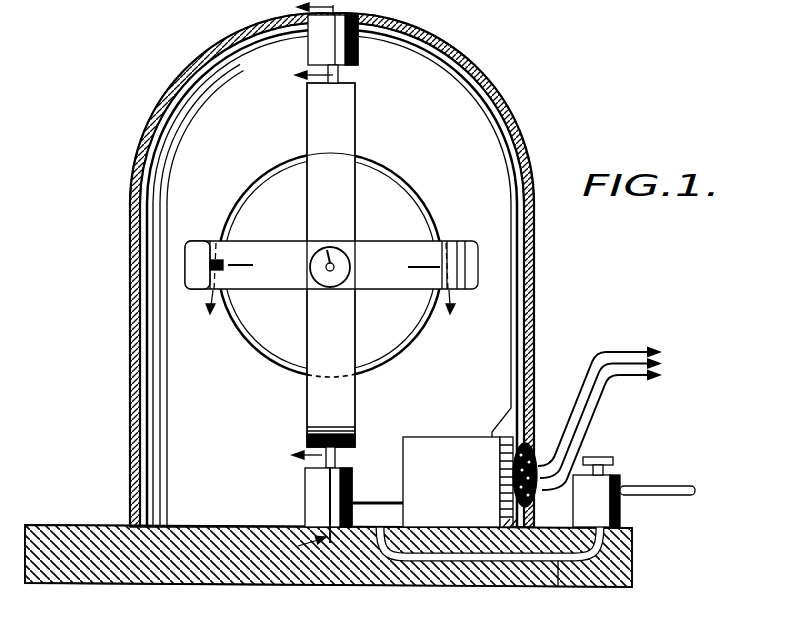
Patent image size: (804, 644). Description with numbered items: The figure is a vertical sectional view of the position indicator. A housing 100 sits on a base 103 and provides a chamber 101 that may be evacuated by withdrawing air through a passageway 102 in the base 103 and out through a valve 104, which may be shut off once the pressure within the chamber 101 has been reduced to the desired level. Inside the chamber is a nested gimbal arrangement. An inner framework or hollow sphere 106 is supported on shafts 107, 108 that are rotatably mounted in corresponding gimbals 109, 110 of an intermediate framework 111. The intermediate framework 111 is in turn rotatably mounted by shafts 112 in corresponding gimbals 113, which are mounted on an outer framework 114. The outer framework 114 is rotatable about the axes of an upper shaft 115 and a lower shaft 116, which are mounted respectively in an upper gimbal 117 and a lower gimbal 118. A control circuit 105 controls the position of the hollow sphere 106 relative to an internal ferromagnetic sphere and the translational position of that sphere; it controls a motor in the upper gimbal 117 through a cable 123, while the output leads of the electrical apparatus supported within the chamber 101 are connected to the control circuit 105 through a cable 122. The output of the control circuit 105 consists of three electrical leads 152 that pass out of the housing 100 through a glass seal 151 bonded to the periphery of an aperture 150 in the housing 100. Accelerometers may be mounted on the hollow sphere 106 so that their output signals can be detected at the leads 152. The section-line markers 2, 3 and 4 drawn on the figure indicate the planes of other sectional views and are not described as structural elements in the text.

The section line 2- 2 is at (296, 46).
The section line 3- 3 is at (295, 504).
The section line 4- 4 is at (330, 319).
The housing 100 is at (522, 119).
The chamber 101 is at (452, 107).
The passageway 102 is at (557, 590).
The base 103 is at (633, 557).
The valve 104 is at (622, 472).
The control circuit 105 is at (424, 432).
The hollow sphere 106 is at (287, 370).
The shaft 107 is at (217, 241).
The shaft 108 is at (446, 241).
The gimbal 109 is at (210, 241).
The gimbal 110 is at (452, 243).
The intermediate framework 111 is at (268, 238).
The shaft 112 is at (336, 248).
The gimbal 113 is at (318, 284).
The outer framework 114 is at (364, 112).
The upper shaft 115 is at (340, 77).
The lower shaft 116 is at (337, 457).
The upper gimbal 117 is at (298, 42).
The lower gimbal 118 is at (296, 500).
The cable 122 is at (371, 501).
The cable 123 is at (511, 370).
The aperture 150 is at (512, 461).
The glass seal 151 is at (513, 495).
The electrical leads 152 is at (624, 374).